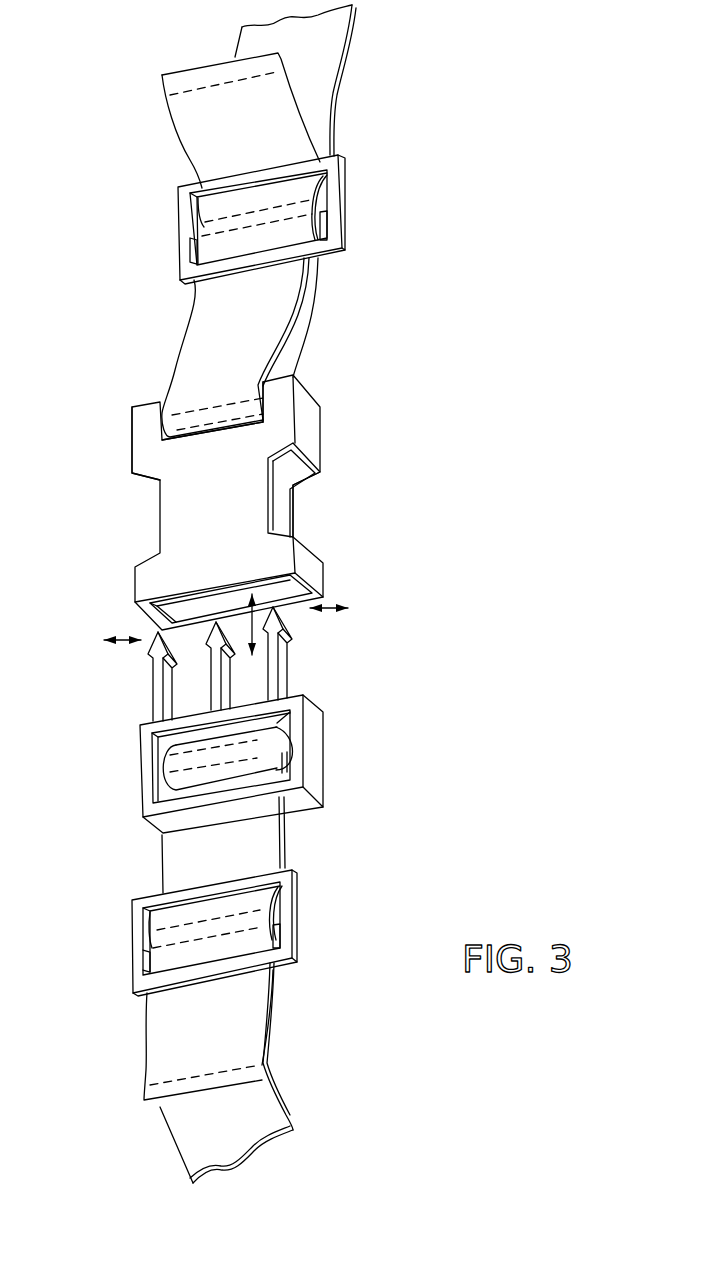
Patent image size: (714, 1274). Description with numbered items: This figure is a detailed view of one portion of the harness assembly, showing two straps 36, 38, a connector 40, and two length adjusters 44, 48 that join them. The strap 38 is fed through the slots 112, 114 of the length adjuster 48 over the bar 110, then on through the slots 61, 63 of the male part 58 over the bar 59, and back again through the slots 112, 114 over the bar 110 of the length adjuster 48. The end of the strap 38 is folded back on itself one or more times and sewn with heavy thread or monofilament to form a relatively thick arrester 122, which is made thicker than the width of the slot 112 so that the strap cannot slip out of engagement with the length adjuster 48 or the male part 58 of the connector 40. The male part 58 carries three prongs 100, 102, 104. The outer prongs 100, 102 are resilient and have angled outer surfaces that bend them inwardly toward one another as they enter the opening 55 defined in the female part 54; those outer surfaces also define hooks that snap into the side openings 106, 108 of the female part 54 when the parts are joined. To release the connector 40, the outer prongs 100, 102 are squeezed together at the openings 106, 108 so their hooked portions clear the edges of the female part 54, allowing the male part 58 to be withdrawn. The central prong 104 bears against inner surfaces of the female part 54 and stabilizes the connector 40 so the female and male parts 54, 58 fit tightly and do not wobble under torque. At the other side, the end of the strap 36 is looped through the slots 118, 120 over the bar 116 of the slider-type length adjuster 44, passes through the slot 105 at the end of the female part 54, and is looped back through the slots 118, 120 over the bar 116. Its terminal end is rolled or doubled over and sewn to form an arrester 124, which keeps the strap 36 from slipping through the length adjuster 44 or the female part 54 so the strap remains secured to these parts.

The strap 36 is at (345, 117).
The strap 38 is at (293, 1070).
The connector 40 is at (276, 720).
The length adjuster 44 is at (275, 219).
The length adjuster 48 is at (228, 932).
The female part 54 is at (233, 509).
The opening 55 is at (283, 588).
The male part 58 is at (280, 755).
The bar 59 is at (283, 740).
The slot 61 is at (290, 768).
The slot 63 is at (290, 727).
The outer prong 100 is at (308, 652).
The outer prong 102 is at (137, 663).
The central prong 104 is at (200, 688).
The slot 105 is at (270, 402).
The side opening 106 is at (300, 500).
The side opening 108 is at (132, 520).
The bar 110 is at (168, 935).
The slot 112 is at (282, 942).
The slot 114 is at (283, 893).
The bar 116 is at (220, 218).
The slot 118 is at (327, 227).
The slot 120 is at (330, 183).
The arrester 122 is at (133, 1088).
The arrester 124 is at (168, 118).